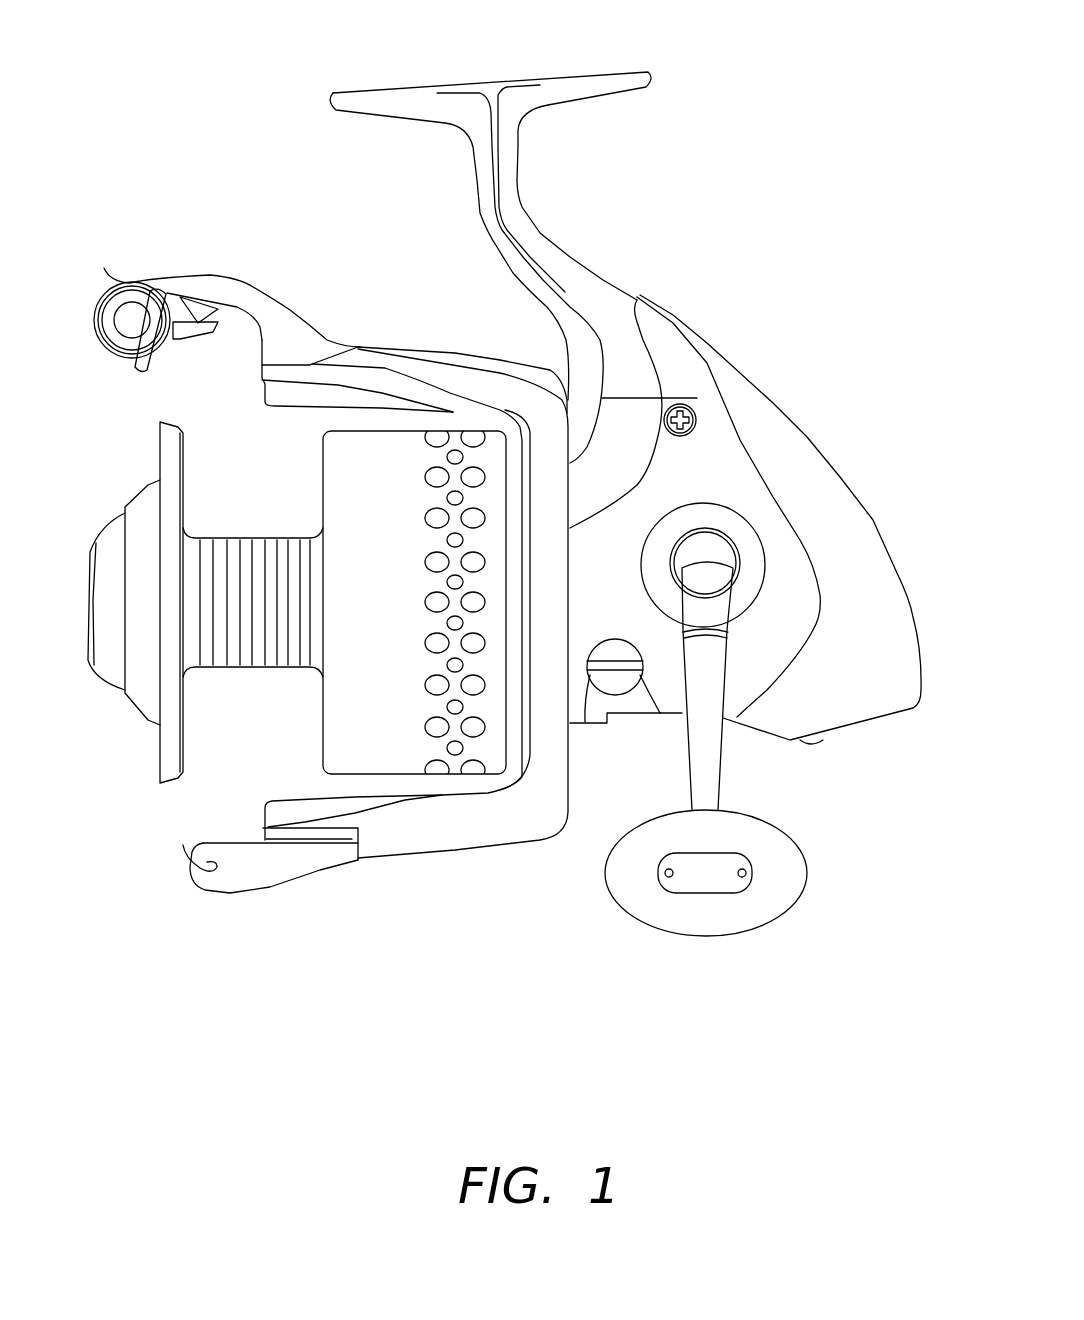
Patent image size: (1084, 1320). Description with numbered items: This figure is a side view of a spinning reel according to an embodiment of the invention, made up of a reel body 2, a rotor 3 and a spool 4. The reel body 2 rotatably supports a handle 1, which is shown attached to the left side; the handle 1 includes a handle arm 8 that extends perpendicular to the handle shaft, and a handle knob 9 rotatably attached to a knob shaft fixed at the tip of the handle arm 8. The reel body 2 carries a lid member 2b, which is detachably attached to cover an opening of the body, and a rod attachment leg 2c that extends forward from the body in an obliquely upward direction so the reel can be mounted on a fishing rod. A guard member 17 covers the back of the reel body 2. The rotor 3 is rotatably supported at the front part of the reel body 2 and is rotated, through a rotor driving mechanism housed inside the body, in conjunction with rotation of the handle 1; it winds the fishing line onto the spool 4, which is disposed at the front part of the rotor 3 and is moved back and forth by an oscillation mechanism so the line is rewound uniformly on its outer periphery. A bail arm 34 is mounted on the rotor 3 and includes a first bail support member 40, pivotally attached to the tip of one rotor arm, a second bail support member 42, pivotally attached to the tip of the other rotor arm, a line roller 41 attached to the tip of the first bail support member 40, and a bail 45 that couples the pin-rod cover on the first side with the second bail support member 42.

The handle 1 is at (716, 740).
The reel body 2 is at (628, 254).
The lid member 2b is at (733, 493).
The rod attachment leg 2c is at (513, 190).
The rotor 3 is at (473, 377).
The spool 4 is at (248, 650).
The handle arm 8 is at (710, 767).
The handle knob 9 is at (627, 883).
The guard member 17 is at (743, 377).
The bail arm 34 is at (141, 389).
The first bail support member 40 is at (257, 293).
The line roller 41 is at (110, 287).
The second bail support member 42 is at (253, 877).
The bail 45 is at (143, 360).